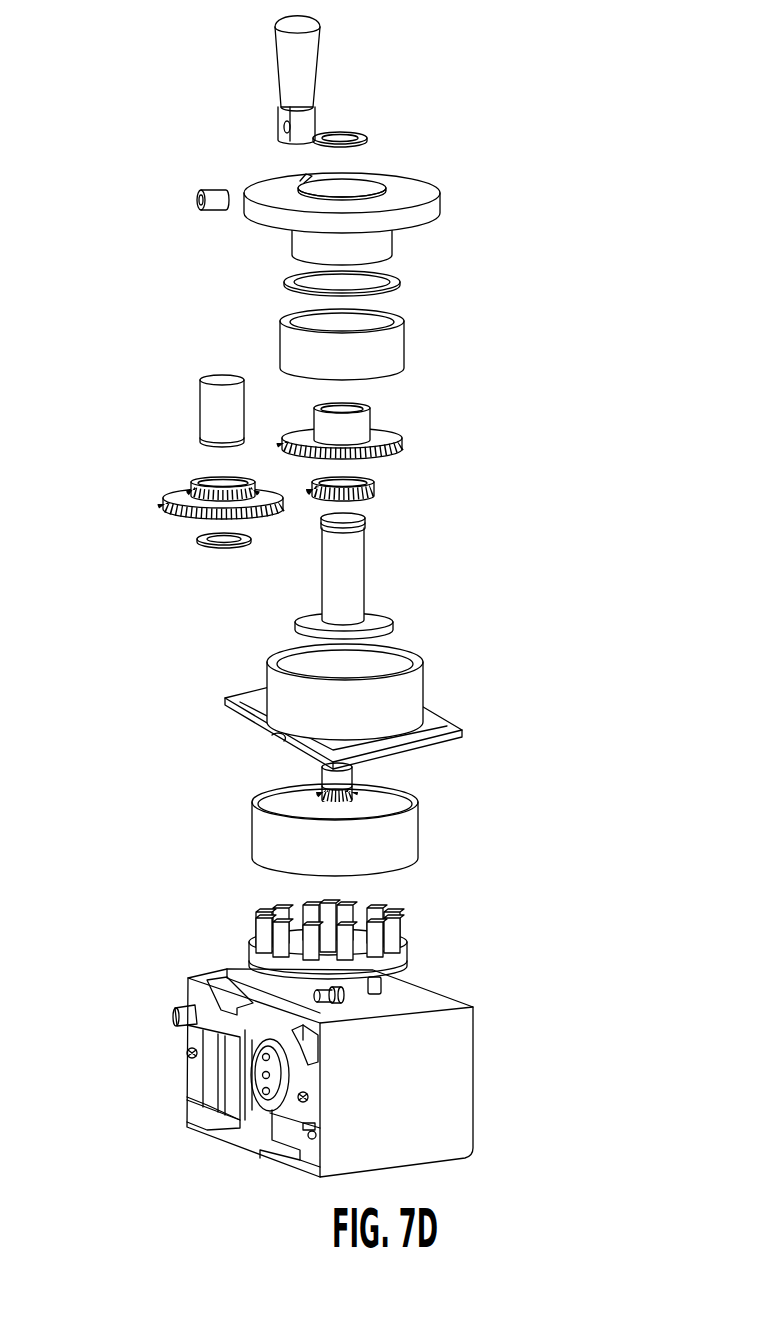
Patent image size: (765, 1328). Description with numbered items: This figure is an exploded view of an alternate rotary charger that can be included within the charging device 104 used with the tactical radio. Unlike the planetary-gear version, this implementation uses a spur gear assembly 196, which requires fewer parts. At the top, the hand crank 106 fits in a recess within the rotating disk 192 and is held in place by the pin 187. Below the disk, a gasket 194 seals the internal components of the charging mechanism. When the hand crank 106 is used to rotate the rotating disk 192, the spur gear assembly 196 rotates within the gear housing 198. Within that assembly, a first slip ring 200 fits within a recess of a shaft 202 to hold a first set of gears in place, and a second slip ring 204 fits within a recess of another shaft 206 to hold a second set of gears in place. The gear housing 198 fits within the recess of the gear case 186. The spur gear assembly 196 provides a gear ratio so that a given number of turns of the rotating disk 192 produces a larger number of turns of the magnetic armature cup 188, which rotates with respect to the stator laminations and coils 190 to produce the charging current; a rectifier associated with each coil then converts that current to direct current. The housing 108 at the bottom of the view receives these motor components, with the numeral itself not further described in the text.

The charging device 104 is at (142, 63).
The hand crank 106 is at (285, 76).
The motor housing 108 is at (455, 1070).
The gear case 186 is at (270, 683).
The pin 187 is at (213, 194).
The magnetic armature cup 188 is at (265, 835).
The stator laminations and coils 190 is at (257, 935).
The rotating disk 192 is at (255, 210).
The gasket 194 is at (400, 283).
The spur gear assembly 196 is at (412, 400).
The gear housing 198 is at (287, 345).
The first slip ring 200 is at (363, 133).
The shaft 202 is at (325, 566).
The second slip ring 204 is at (200, 544).
The shaft 206 is at (198, 416).